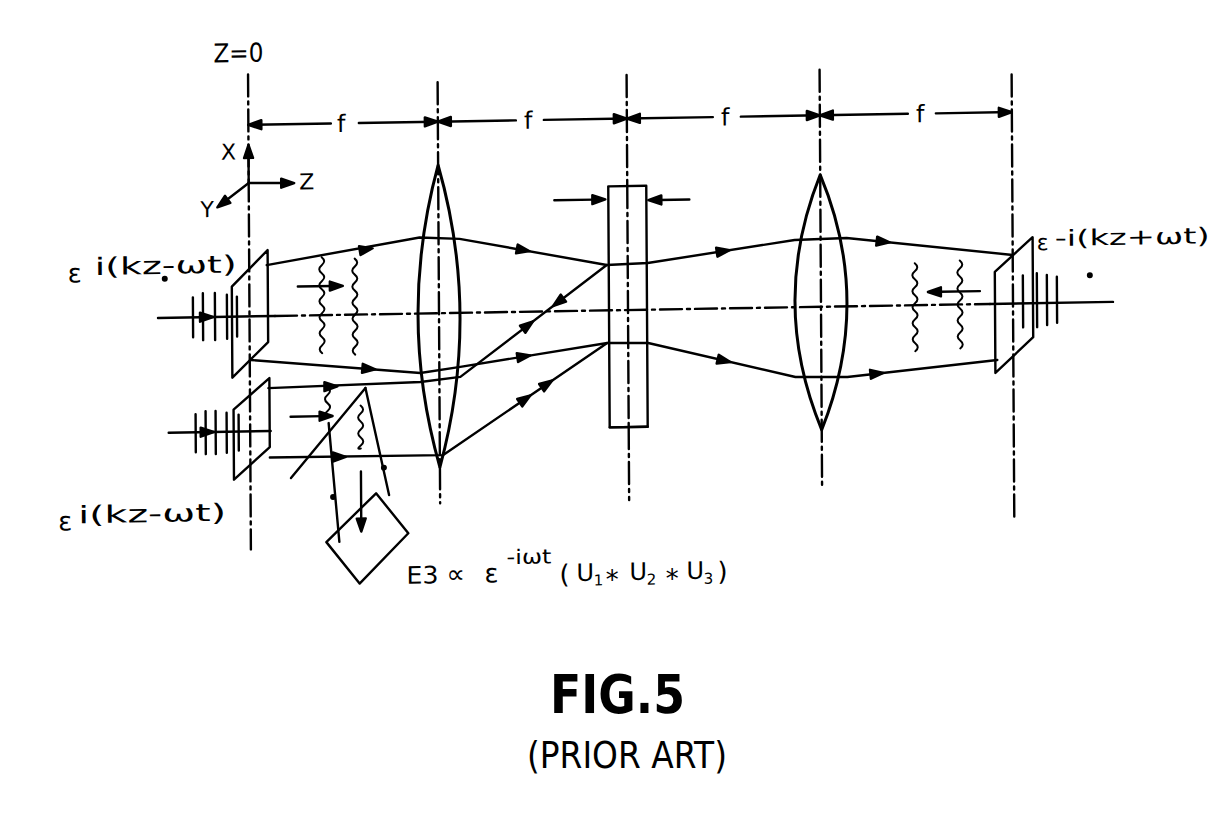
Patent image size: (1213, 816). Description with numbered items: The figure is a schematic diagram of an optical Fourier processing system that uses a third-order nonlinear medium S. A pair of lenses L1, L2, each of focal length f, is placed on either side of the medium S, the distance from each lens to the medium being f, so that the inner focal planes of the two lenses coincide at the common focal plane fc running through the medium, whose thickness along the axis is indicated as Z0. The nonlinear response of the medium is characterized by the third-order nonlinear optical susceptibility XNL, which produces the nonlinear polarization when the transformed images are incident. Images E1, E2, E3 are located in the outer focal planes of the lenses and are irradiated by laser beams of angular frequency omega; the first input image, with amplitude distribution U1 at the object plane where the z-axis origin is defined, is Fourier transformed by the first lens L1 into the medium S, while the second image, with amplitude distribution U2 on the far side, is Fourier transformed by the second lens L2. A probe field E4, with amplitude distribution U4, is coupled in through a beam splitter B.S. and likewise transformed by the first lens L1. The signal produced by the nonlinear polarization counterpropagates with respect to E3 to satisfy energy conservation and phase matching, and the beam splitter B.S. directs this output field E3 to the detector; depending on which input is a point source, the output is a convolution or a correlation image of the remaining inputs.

The input image amplitude distribution U1 is at (267, 244).
The fourth input image amplitude distribution U4 is at (238, 473).
The second image amplitude distribution U2 is at (1030, 351).
The first optical image E1 is at (328, 306).
The second optical image E2 is at (946, 304).
The third optical image E3 is at (376, 485).
The probe optical field E4 is at (438, 364).
The first Fourier transform lens L1 is at (452, 292).
The second Fourier transform lens L2 is at (830, 277).
The beam splitter B.S. is at (315, 451).
The third-order nonlinear optical susceptibility XNL is at (640, 400).
The medium thickness Z0 is at (638, 202).
The third-order nonlinear medium S is at (637, 434).
The common focal plane fc is at (639, 483).